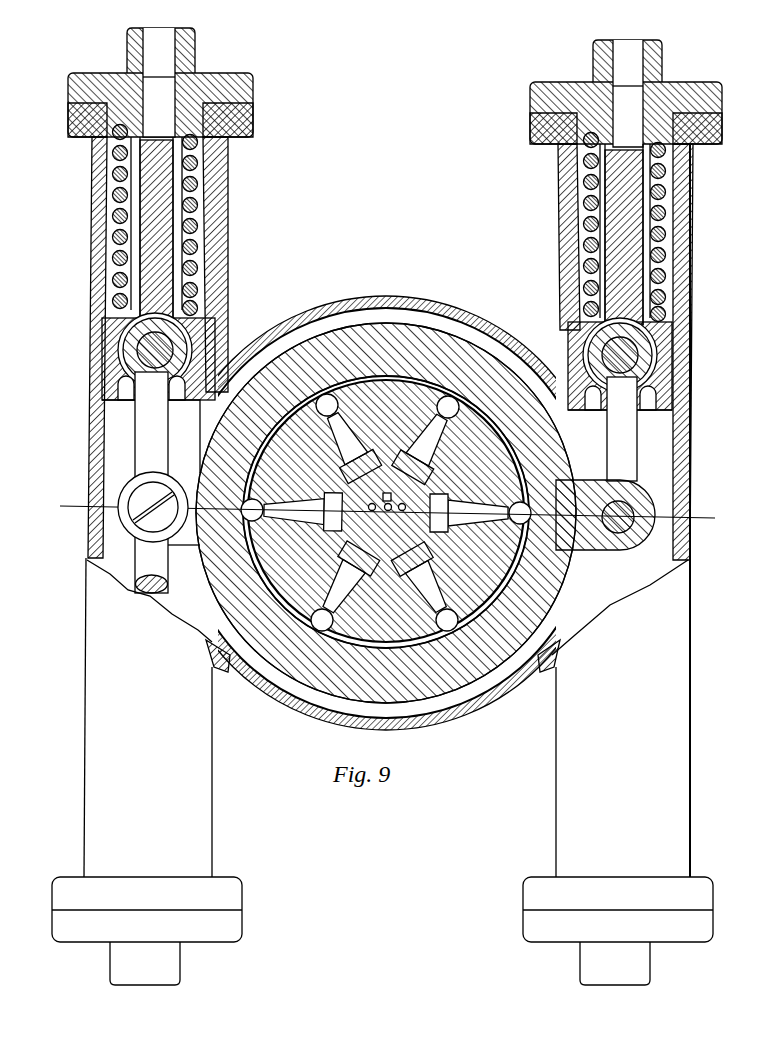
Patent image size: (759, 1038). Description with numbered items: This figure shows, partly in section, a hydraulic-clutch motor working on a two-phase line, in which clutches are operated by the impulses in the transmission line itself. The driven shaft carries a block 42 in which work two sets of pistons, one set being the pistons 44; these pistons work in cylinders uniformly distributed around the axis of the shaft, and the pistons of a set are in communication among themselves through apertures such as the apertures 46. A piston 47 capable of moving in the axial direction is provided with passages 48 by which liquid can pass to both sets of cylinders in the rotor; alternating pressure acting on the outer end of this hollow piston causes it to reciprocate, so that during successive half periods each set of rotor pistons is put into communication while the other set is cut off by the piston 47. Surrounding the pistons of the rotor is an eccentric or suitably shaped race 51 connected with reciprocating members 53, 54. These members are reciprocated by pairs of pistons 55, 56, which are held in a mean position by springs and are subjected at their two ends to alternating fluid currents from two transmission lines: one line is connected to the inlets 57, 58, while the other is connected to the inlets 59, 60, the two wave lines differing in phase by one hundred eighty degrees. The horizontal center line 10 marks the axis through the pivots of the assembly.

The axis line / pivot pin 10 is at (387, 507).
The block 42 is at (352, 645).
The pistons 44 is at (440, 437).
The apertures 46 is at (396, 494).
The piston 47 is at (480, 513).
The passages 48 is at (364, 546).
The race 51 is at (192, 478).
The reciprocating member 53 is at (148, 434).
The reciprocating member 54 is at (625, 468).
The pistons 55 is at (119, 258).
The pistons 56 is at (657, 262).
The inlet 57 is at (161, 40).
The inlet 58 is at (629, 48).
The inlet 59 is at (147, 946).
The inlet 60 is at (618, 946).